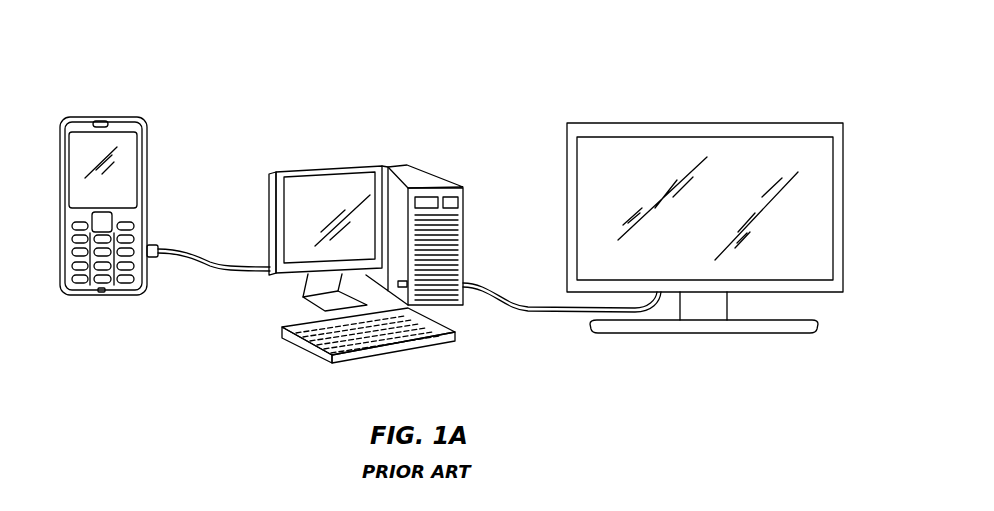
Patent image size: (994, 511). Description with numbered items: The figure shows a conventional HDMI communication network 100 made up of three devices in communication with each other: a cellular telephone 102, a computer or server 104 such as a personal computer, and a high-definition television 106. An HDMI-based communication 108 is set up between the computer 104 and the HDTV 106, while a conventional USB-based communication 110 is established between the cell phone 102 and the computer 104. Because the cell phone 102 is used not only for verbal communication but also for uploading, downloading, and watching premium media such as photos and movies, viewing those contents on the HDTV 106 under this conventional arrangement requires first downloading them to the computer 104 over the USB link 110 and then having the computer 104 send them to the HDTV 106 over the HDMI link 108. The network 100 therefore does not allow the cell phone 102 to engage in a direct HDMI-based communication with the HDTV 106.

The HDMI communication network 100 is at (615, 44).
The cellular telephone 102 is at (128, 116).
The computer 104 is at (414, 147).
The high-definition television 106 is at (660, 123).
The HDMI-based communication 108 is at (525, 297).
The USB-based communication 110 is at (221, 263).